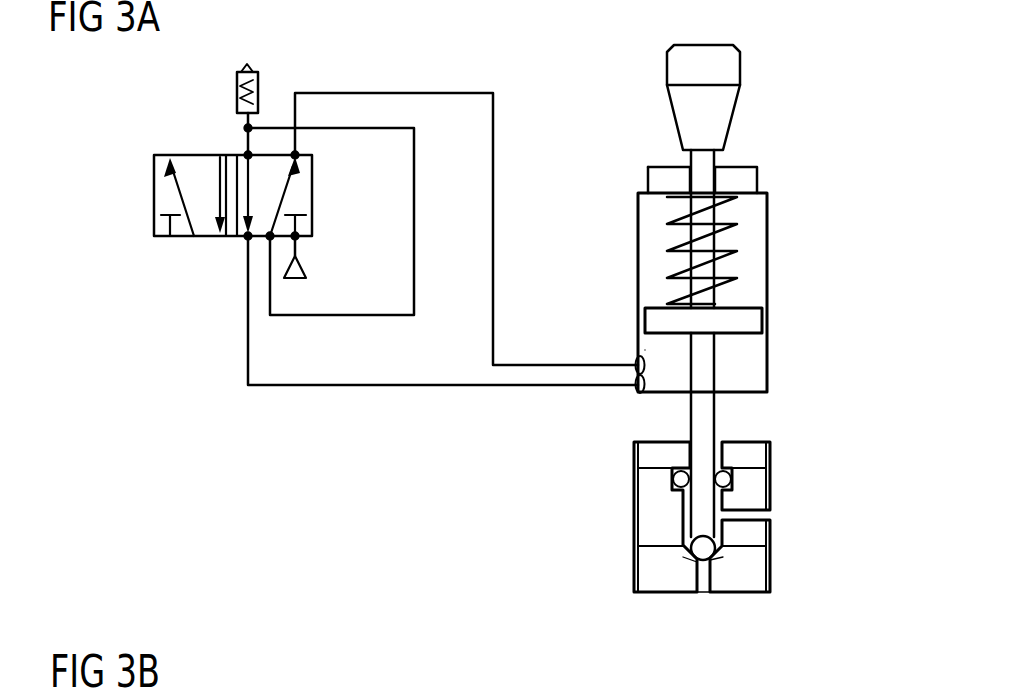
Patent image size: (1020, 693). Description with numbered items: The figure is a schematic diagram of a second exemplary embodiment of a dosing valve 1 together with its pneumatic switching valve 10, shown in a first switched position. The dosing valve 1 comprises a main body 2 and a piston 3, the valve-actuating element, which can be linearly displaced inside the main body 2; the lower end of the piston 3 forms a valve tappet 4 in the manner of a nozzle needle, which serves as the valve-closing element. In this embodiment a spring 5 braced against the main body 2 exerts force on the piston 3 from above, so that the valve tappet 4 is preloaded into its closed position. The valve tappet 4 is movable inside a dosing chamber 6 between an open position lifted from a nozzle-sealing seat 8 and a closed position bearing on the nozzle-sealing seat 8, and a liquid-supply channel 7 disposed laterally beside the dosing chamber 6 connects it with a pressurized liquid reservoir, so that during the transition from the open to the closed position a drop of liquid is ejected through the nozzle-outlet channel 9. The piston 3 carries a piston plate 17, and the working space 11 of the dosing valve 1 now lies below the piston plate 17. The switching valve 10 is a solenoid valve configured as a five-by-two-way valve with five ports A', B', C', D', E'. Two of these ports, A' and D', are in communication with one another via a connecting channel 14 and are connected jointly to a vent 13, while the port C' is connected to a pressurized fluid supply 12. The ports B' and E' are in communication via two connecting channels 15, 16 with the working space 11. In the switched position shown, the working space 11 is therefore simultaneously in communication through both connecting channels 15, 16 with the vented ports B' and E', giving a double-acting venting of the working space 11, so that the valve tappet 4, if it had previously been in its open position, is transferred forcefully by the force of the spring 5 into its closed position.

The dosing valve 1 is at (778, 100).
The main body 2 is at (768, 290).
The piston 3 is at (720, 368).
The valve tappet 4 is at (703, 518).
The spring 5 is at (728, 240).
The dosing chamber 6 is at (682, 535).
The liquid-supply channel 7 is at (763, 517).
The nozzle-sealing seat 8 is at (680, 560).
The nozzle-outlet channel 9 is at (703, 598).
The switching valve 10 is at (140, 196).
The working space 11 is at (758, 353).
The pressurized fluid supply 12 is at (300, 288).
The vent 13 is at (272, 88).
The connecting channel 14 is at (417, 220).
The connecting channel 15 is at (537, 364).
The connecting channel 16 is at (537, 387).
The piston plate 17 is at (758, 318).
The first port A' is at (217, 119).
The third port B' is at (344, 155).
The port C' is at (331, 264).
The second port D' is at (244, 278).
The port E' is at (206, 264).